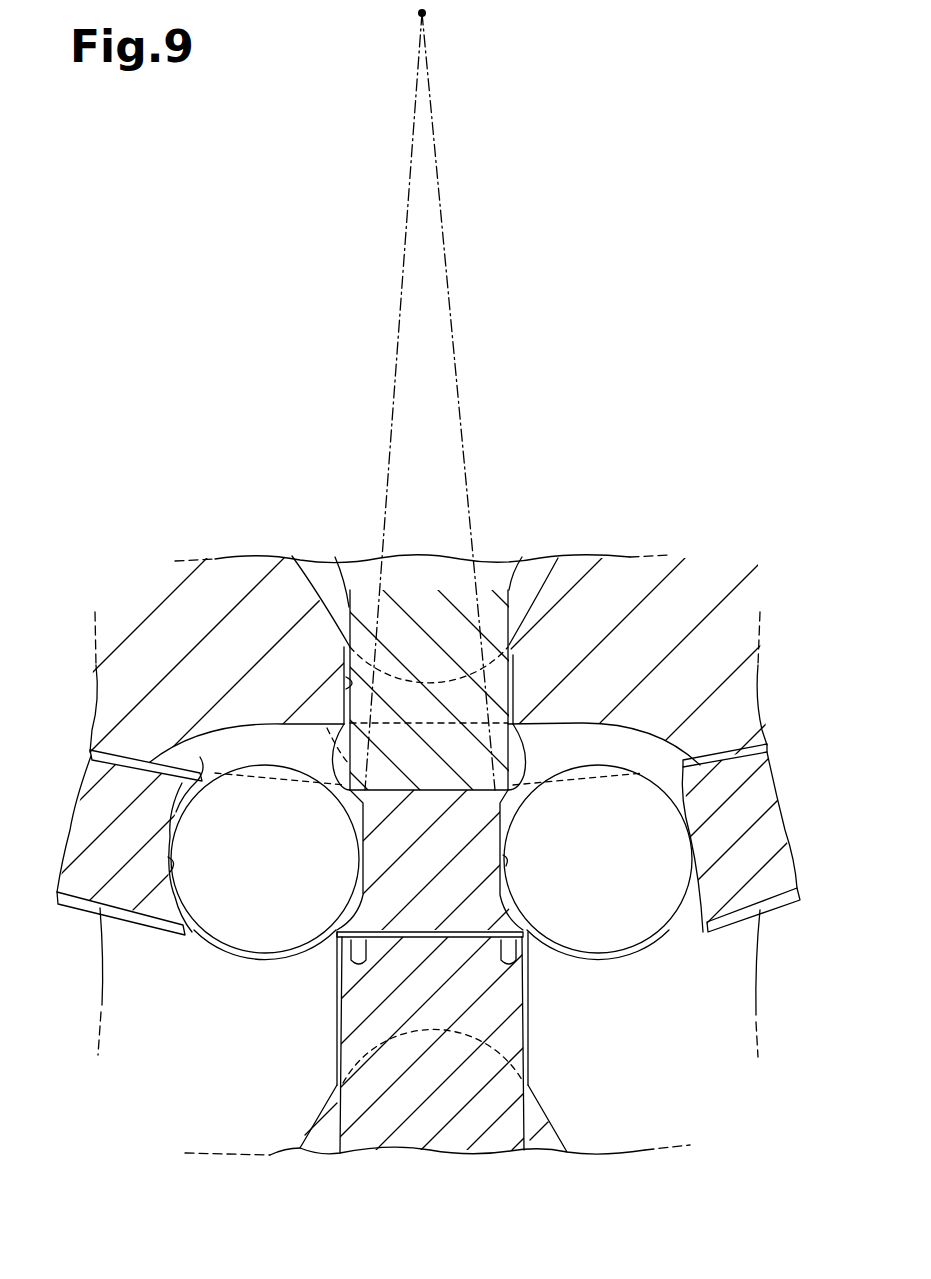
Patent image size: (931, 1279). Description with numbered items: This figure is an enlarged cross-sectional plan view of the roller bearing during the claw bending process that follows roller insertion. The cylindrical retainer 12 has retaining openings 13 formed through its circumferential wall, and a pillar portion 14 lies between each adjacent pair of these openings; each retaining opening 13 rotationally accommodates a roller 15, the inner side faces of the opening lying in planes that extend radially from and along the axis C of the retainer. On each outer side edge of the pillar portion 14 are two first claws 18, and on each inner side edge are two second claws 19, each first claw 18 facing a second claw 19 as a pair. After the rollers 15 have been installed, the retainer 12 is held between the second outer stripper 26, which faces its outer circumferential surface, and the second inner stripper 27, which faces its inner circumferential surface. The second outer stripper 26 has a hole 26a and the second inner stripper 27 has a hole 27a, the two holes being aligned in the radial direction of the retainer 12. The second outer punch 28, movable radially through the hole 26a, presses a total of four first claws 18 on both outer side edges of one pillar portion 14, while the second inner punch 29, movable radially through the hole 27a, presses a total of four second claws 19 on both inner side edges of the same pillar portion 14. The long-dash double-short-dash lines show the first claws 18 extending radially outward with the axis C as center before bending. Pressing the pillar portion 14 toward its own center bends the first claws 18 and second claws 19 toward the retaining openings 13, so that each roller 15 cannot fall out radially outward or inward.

The axis C is at (426, 14).
The retainer 12 is at (830, 792).
The retaining opening 13 is at (166, 859).
The pillar portion 14 is at (429, 924).
The roller 15 is at (285, 767).
The first claw 18 is at (183, 935).
The second claw 19 is at (200, 757).
The second outer stripper 26 is at (762, 968).
The hole of the second outer stripper 26a is at (526, 1055).
The second inner stripper 27 is at (746, 719).
The hole of the second inner stripper 27a is at (346, 683).
The second outer punch 28 is at (527, 1038).
The second inner punch 29 is at (500, 676).